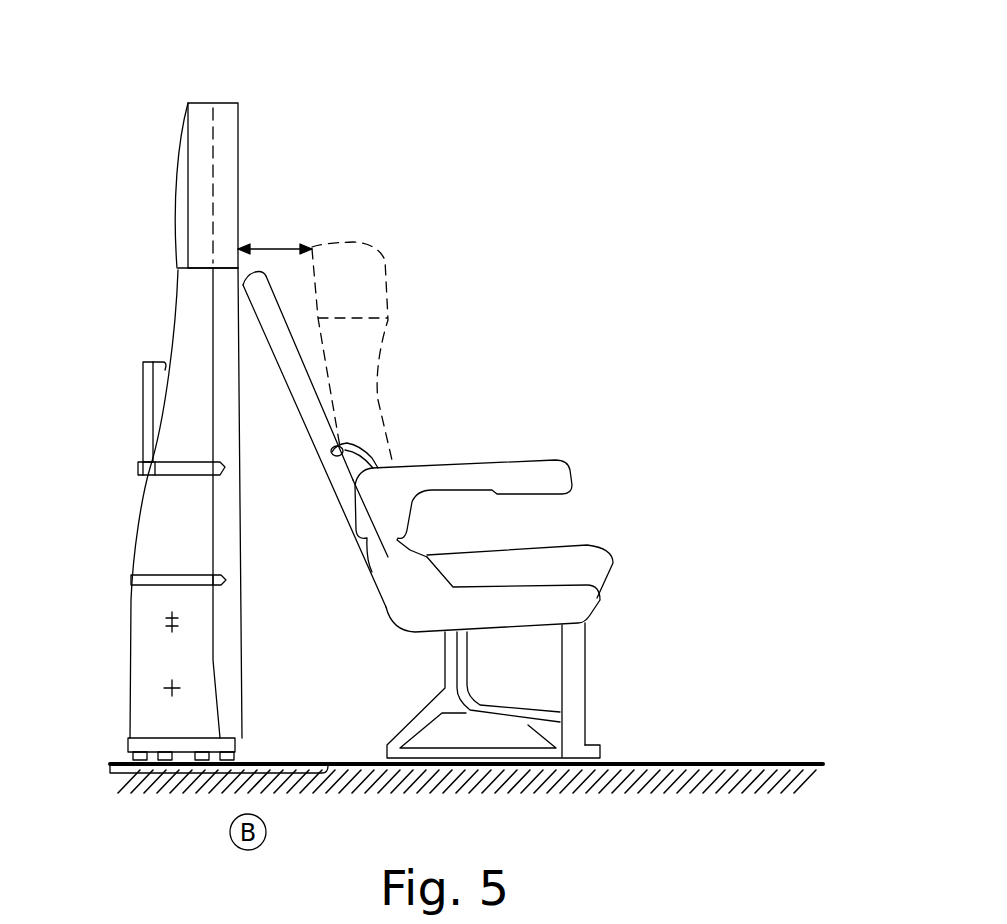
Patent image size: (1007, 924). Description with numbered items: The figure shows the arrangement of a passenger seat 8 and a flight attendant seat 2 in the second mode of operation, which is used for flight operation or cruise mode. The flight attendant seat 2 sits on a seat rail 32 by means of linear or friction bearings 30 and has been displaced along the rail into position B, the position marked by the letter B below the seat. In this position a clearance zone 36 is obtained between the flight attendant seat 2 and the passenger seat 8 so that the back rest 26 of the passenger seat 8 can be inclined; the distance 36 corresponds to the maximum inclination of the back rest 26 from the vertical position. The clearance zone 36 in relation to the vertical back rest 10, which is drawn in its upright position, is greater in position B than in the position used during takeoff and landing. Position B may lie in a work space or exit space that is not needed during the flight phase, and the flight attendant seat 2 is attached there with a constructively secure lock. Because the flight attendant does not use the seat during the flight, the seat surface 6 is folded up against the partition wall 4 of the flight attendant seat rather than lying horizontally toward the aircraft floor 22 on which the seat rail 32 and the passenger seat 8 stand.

The flight attendant seat 2 is at (243, 100).
The partition wall 4 is at (230, 138).
The seat surface 6 is at (143, 420).
The passenger seat 8 is at (482, 288).
The back rest 10 is at (365, 283).
The aircraft floor 22 is at (775, 763).
The back rest 26 is at (261, 287).
The linear or friction bearings 30 is at (233, 742).
The seat rail 32 is at (117, 760).
The clearance zone 36 is at (261, 287).